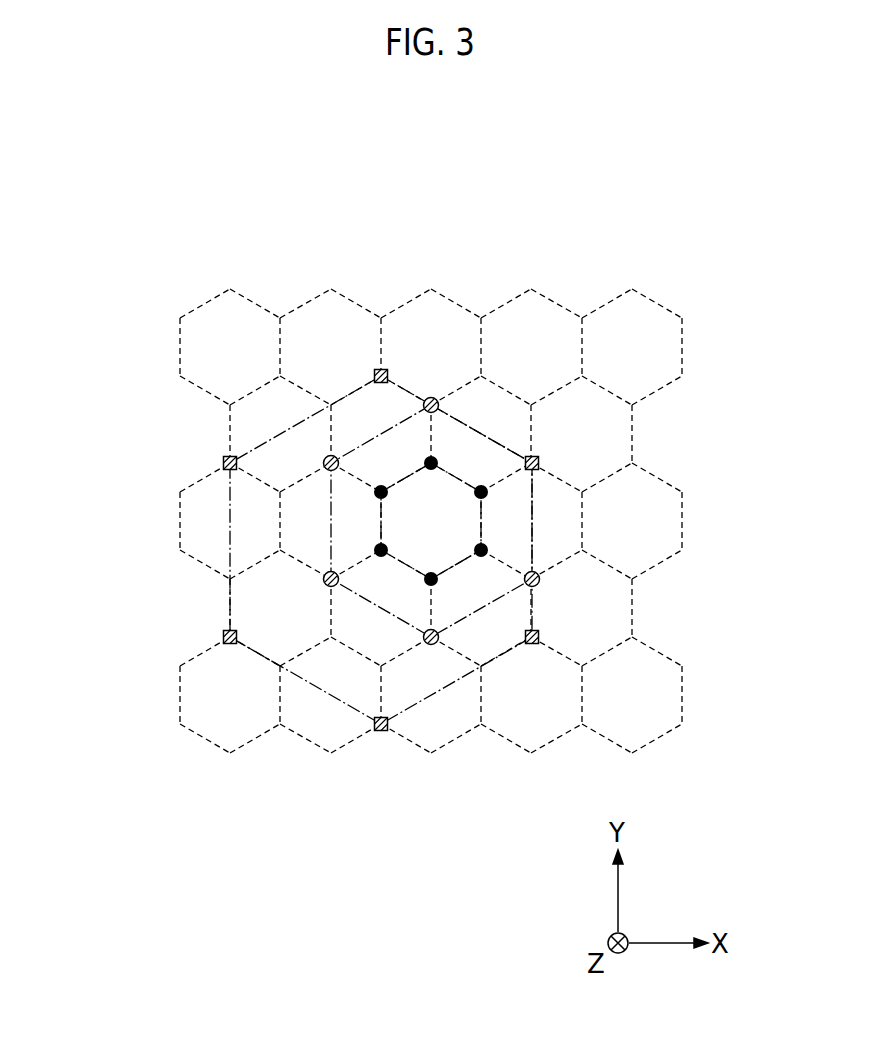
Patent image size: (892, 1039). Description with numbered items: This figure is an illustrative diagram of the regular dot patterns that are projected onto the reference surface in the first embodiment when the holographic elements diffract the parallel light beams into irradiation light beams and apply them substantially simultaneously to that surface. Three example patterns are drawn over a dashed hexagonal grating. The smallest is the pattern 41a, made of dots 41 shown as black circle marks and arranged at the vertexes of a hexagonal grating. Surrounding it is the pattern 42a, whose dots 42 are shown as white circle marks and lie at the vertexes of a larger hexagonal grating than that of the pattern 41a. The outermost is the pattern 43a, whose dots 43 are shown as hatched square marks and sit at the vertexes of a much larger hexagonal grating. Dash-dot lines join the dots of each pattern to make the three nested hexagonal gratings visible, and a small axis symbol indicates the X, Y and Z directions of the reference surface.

The dot (black circle mark) 41 is at (381, 485).
The dot (white circle mark) 42 is at (327, 458).
The dot (hatched square mark) 43 is at (379, 369).
The pattern 41a is at (483, 520).
The pattern 42a is at (533, 541).
The pattern 43a is at (268, 438).